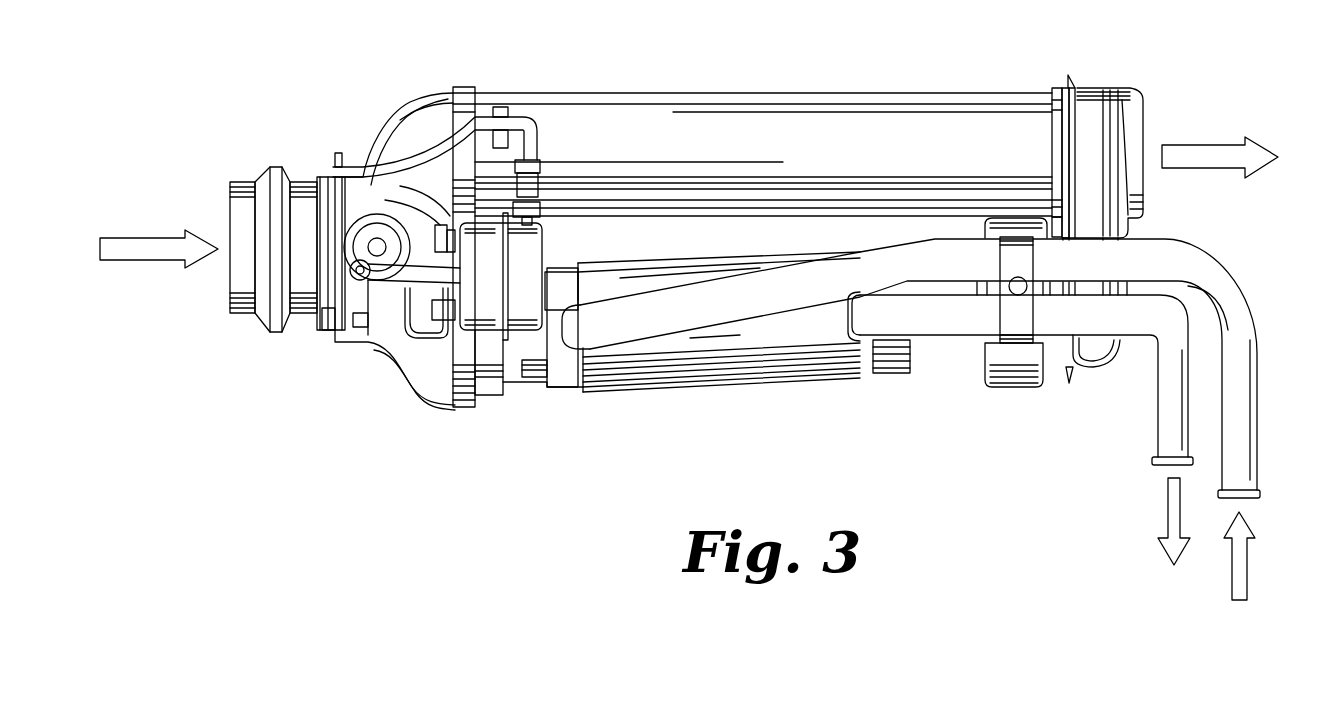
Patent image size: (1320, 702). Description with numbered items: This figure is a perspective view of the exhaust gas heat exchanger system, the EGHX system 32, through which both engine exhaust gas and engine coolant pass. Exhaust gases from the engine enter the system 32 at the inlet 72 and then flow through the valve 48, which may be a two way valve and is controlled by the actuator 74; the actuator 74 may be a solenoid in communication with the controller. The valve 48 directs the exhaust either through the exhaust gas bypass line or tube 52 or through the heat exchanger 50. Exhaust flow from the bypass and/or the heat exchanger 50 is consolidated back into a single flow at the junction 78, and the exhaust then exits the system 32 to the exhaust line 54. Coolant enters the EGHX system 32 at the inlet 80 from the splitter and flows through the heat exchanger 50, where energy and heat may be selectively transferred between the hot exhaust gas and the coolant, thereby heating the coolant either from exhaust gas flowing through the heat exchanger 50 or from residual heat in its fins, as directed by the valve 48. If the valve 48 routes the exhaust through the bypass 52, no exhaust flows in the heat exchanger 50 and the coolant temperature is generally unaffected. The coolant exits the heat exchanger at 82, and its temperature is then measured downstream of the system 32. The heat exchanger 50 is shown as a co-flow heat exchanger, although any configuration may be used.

The EGHX system 32 is at (292, 388).
The valve 48 is at (387, 378).
The heat exchanger 50 is at (737, 390).
The exhaust gas bypass line or tube 52 is at (760, 95).
The exhaust line 54 is at (1205, 140).
The inlet 72 is at (165, 236).
The actuator 74 is at (495, 300).
The junction 78 is at (1092, 90).
The inlet 80 is at (1248, 570).
The coolant exit 82 is at (1165, 510).